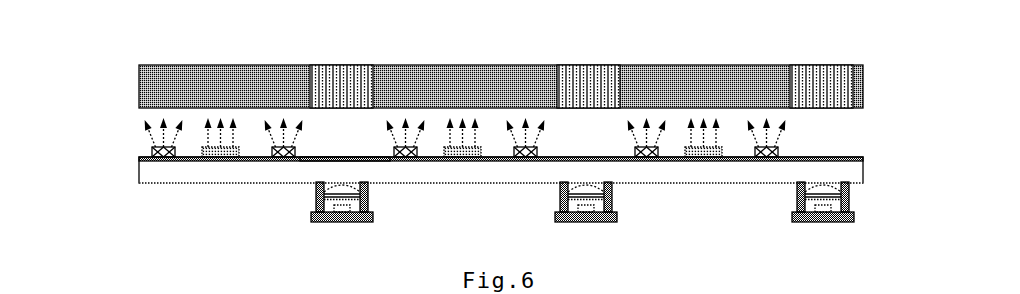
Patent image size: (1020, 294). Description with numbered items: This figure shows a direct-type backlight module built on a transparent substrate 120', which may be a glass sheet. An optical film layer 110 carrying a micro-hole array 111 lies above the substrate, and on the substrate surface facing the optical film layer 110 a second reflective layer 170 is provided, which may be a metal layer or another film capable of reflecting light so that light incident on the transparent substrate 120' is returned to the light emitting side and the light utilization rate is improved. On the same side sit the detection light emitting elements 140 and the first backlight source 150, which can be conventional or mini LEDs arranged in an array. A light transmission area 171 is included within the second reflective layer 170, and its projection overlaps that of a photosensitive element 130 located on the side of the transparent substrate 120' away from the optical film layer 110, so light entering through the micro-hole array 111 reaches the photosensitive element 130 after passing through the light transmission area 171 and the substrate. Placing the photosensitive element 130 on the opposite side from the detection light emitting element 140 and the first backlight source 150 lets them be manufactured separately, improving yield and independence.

The optical film layer 110 is at (138, 90).
The micro-hole array 111 is at (620, 89).
The transparent substrate 120' is at (454, 172).
The photosensitive element 130 is at (311, 203).
The detection light emitting element 140 is at (220, 161).
The first backlight source 150 is at (767, 160).
The second reflective layer 170 is at (256, 158).
The light transmission area 171 is at (358, 158).